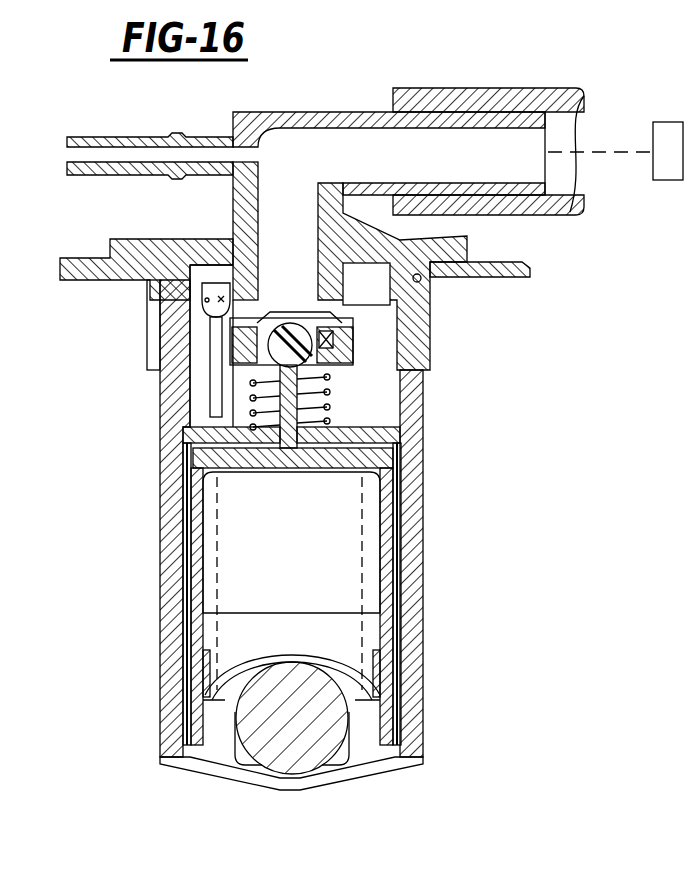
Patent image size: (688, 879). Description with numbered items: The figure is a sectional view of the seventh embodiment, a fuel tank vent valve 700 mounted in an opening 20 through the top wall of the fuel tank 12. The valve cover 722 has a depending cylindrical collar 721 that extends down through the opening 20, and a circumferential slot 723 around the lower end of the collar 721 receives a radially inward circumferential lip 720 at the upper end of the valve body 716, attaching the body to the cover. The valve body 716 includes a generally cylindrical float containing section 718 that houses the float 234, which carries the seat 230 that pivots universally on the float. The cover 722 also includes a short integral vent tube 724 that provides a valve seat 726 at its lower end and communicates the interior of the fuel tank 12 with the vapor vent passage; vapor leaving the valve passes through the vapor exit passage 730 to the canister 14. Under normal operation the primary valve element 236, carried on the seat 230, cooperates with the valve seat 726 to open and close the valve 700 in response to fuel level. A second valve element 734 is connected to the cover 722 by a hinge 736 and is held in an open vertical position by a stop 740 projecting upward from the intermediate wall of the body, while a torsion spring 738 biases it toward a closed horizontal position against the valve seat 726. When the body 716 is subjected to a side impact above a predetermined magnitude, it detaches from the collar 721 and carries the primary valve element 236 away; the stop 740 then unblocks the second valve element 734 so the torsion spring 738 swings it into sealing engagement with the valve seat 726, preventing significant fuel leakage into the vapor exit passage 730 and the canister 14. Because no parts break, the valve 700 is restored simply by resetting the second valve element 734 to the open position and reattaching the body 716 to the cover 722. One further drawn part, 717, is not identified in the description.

The valve 700 is at (597, 97).
The valve cover 722 is at (291, 103).
The vapor exit passage 730 is at (442, 168).
The canister 14 is at (668, 181).
The fuel tank 12 is at (470, 258).
The opening 20 is at (422, 279).
The circumferential lip 720 is at (430, 290).
The vent tube 724 is at (258, 262).
The collar 721 is at (152, 306).
The circumferential slot 723 is at (172, 300).
The hinge 736 is at (212, 283).
The second valve element 734 is at (200, 387).
The torsion spring 738 is at (212, 320).
The valve element 236 is at (280, 312).
The valve seat 726 is at (353, 362).
The seat 230 is at (418, 386).
The chamber floor plate 717 is at (357, 430).
The valve body 716 is at (432, 515).
The float 234 is at (390, 547).
The float containing section 718 is at (410, 577).
The stop 740 is at (247, 417).